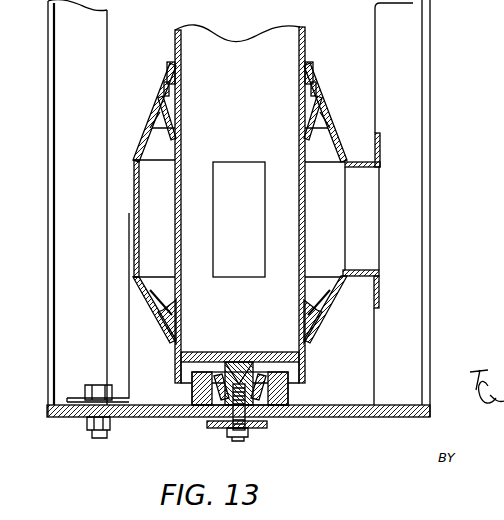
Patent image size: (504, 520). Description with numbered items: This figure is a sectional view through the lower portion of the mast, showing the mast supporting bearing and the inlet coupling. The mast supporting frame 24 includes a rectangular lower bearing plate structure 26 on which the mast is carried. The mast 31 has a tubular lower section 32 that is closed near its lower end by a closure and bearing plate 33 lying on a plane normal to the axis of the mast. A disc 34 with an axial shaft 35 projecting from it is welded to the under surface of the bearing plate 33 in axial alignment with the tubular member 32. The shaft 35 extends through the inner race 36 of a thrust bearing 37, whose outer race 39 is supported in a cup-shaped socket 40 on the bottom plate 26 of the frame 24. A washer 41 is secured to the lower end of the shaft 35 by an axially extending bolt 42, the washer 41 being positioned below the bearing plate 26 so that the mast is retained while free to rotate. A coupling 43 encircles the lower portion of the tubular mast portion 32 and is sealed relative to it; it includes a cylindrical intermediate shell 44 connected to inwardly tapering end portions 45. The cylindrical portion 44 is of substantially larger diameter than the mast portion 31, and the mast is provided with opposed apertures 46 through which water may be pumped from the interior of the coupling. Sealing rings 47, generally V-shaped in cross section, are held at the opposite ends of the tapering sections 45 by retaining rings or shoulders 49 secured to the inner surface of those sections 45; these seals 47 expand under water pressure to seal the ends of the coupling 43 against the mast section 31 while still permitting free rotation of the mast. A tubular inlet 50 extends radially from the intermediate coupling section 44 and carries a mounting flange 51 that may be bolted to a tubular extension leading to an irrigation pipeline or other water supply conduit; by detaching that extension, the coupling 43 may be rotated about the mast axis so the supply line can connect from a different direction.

The mast supporting frame 24 is at (50, 291).
The lower bearing plate structure 26 is at (355, 412).
The mast 31 is at (308, 46).
The tubular lower section 32 is at (305, 25).
The closure and bearing plate 33 is at (218, 354).
The disc 34 is at (239, 352).
The axial shaft 35 is at (202, 413).
The inner race 36 is at (258, 364).
The thrust bearing 37 is at (292, 384).
The outer race 39 is at (272, 398).
The cup-shaped socket 40 is at (272, 412).
The washer 41 is at (215, 428).
The bolt 42 is at (239, 437).
The coupling 43 is at (340, 138).
The cylindrical intermediate shell 44 is at (134, 187).
The inwardly tapering end portions 45 is at (142, 158).
The opposed apertures 46 is at (216, 224).
The sealing rings 47 is at (318, 112).
The retaining rings 49 is at (338, 130).
The tubular inlet 50 is at (364, 204).
The mounting flange 51 is at (382, 150).